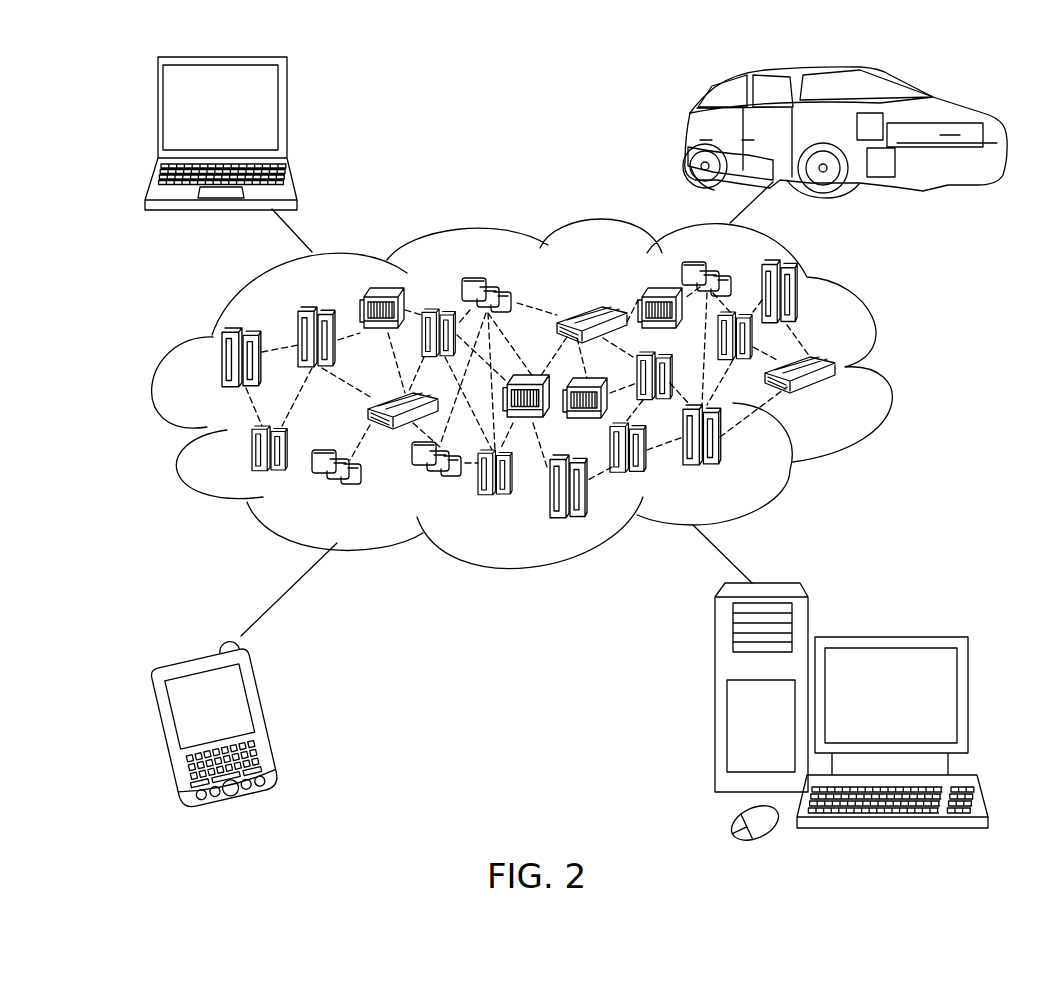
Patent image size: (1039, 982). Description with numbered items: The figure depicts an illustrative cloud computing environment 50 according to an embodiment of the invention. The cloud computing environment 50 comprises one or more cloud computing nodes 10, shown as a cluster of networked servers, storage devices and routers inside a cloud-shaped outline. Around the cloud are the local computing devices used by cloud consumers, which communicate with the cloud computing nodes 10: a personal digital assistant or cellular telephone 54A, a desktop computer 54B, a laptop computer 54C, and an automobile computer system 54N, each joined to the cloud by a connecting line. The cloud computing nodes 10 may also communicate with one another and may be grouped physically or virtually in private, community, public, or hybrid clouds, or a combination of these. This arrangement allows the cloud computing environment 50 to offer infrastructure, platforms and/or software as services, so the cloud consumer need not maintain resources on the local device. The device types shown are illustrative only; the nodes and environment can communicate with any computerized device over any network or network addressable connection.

The cloud computing node 10 is at (847, 401).
The cloud computing environment 50 is at (892, 373).
The personal digital assistant or cellular telephone 54A is at (273, 717).
The desktop computer 54B is at (888, 637).
The laptop computer 54C is at (287, 114).
The automobile computer system 54N is at (687, 130).